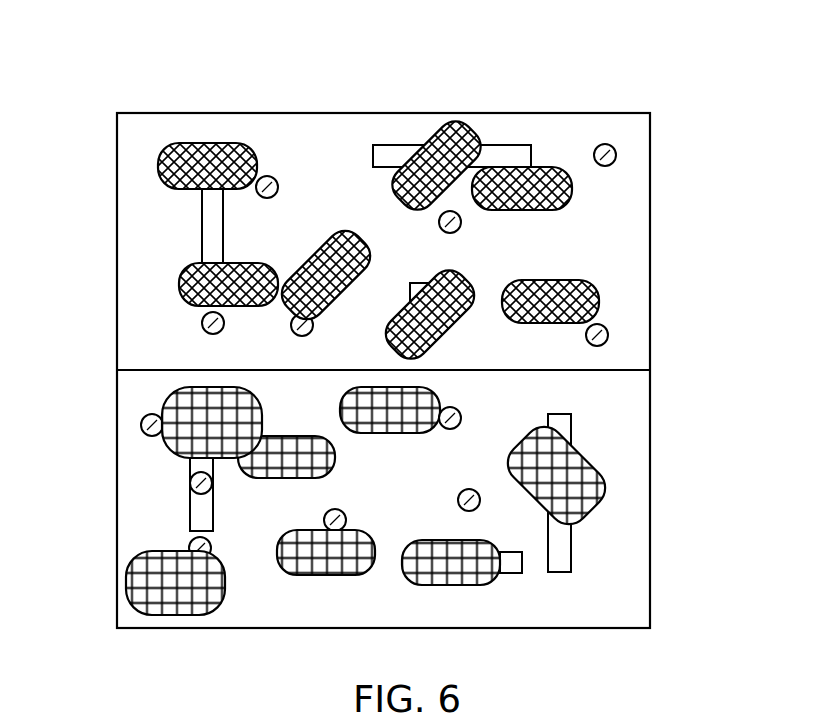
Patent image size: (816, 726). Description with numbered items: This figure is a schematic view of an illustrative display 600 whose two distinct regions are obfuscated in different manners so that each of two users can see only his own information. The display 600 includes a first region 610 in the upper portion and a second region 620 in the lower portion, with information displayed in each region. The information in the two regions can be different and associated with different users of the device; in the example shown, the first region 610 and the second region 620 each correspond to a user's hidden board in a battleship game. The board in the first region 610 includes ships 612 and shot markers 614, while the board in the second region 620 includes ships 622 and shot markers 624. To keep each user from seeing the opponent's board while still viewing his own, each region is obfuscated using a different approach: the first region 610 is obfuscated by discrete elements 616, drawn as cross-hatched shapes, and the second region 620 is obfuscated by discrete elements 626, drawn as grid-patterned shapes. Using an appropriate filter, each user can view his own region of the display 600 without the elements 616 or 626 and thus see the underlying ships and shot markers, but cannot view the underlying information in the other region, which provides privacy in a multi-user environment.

The display 600 is at (306, 92).
The first region 610 is at (130, 215).
The ship 612 is at (517, 152).
The shot marker 614 is at (611, 147).
The obfuscating element 616 is at (457, 126).
The second region 620 is at (130, 447).
The ship 622 is at (560, 562).
The shot marker 624 is at (352, 547).
The obfuscating element 626 is at (178, 585).